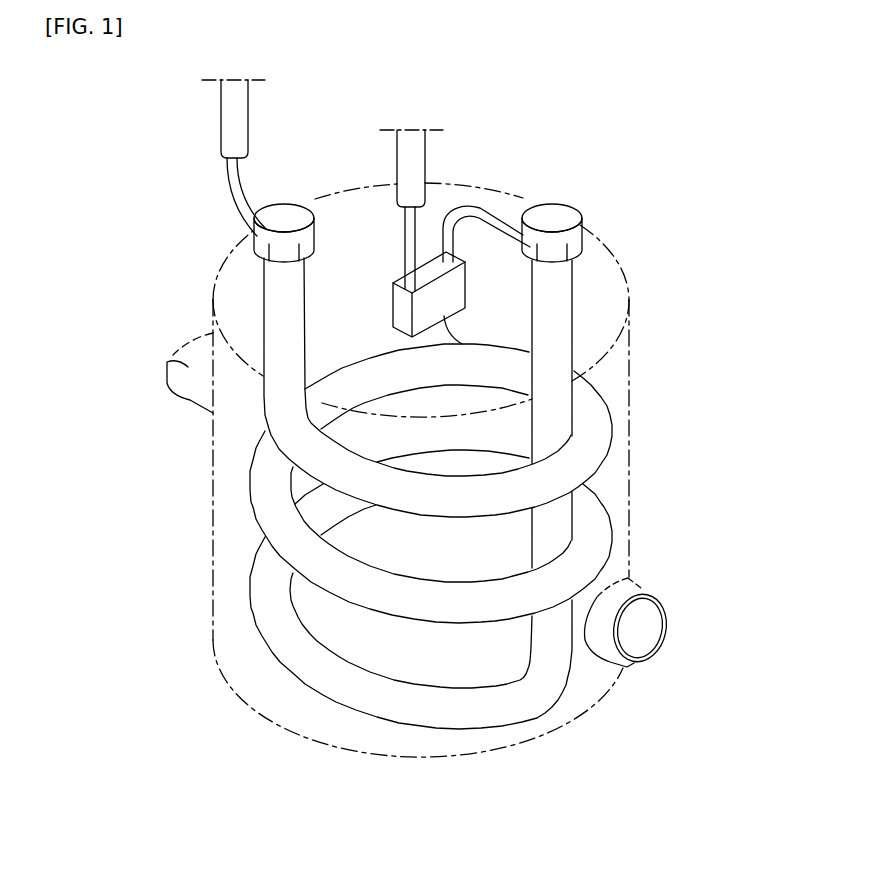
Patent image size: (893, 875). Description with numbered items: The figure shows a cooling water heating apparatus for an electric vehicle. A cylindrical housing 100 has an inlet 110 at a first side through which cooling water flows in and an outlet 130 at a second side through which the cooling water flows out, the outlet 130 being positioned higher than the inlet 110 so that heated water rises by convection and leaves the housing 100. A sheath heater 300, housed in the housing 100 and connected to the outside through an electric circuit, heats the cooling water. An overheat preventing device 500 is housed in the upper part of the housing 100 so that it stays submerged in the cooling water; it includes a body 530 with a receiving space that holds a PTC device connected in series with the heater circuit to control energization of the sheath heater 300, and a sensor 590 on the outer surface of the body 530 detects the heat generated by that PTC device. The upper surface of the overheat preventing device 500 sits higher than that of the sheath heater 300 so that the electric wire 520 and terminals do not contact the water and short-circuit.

The housing 100 is at (213, 555).
The inlet 110 is at (628, 578).
The outlet 130 is at (188, 367).
The sheath heater 300 is at (262, 482).
The overheat preventing device 500 is at (473, 218).
The electric wire 520 is at (430, 213).
The body 530 is at (445, 300).
The sensor 590 is at (446, 335).